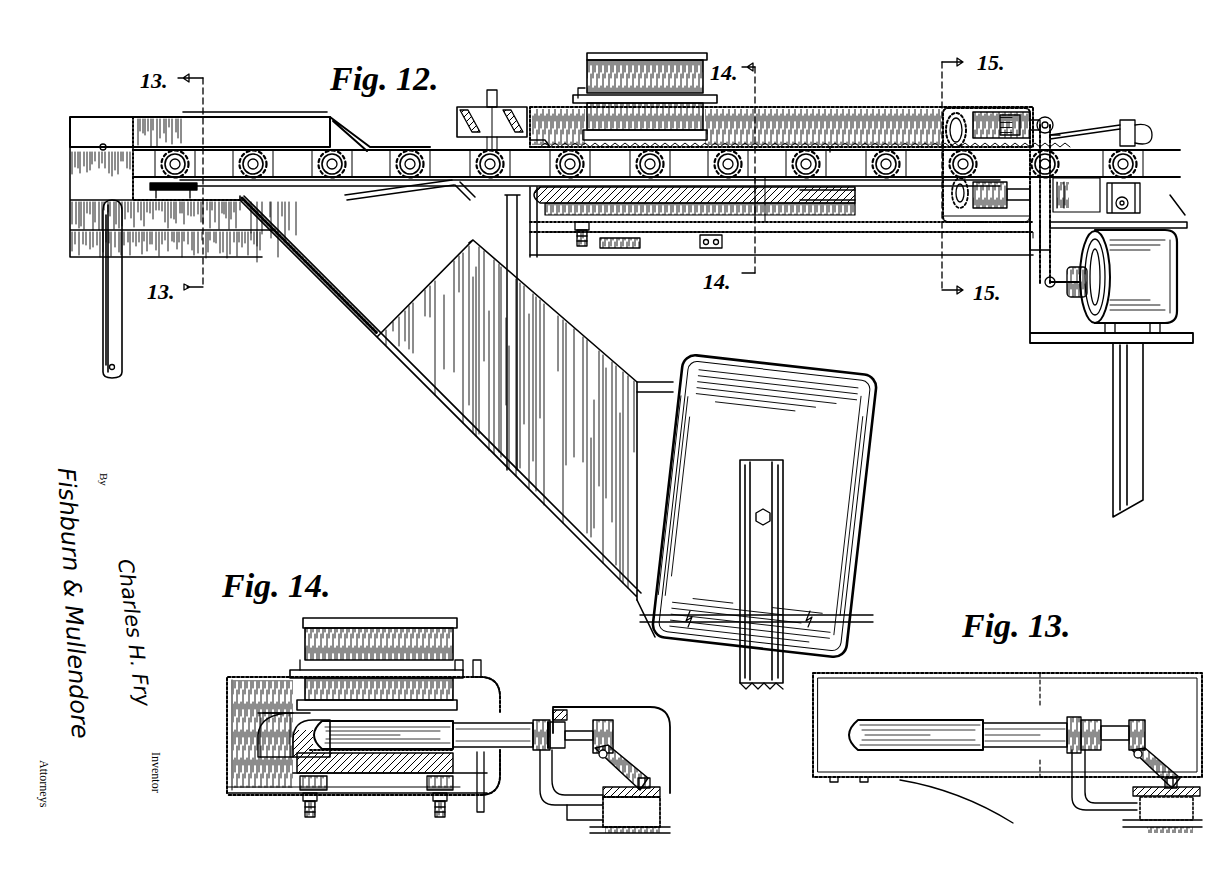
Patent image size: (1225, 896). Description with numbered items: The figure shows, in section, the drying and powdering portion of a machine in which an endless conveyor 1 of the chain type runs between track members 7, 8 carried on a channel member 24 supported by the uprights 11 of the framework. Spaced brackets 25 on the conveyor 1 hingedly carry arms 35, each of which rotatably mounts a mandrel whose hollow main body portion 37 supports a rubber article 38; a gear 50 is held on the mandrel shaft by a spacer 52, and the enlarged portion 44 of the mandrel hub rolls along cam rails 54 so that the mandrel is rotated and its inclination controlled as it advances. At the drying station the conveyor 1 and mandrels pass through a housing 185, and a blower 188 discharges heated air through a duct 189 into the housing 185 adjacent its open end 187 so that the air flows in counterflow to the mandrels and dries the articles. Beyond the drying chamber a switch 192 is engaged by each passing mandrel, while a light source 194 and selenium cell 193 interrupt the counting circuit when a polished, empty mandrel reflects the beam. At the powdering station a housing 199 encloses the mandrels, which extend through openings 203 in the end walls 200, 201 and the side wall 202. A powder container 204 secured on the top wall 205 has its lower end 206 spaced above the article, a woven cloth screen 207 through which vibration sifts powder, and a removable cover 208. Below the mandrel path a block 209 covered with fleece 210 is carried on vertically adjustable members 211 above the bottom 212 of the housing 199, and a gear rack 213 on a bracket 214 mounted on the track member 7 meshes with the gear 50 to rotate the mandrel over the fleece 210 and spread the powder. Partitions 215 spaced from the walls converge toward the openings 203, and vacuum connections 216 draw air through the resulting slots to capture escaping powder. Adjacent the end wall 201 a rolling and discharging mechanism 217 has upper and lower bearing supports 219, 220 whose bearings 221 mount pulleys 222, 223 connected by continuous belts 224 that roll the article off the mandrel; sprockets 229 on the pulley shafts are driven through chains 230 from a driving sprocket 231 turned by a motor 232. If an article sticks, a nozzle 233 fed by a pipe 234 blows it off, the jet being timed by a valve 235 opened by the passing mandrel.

In FIG. 12, the endless conveyor 1 is at (463, 229).
In FIG. 14, the endless conveyor 1 is at (650, 781).
In FIG. 13, the endless conveyor 1 is at (1160, 779).
In FIG. 14, the track member 7 is at (662, 793).
In FIG. 13, the track member 7 is at (1185, 787).
In FIG. 14, the track member 8 is at (607, 803).
In FIG. 13, the track member 8 is at (1137, 792).
In FIG. 14, the uprights 11 is at (662, 830).
In FIG. 13, the uprights 11 is at (1147, 826).
In FIG. 12, the channel member 24 is at (677, 252).
In FIG. 14, the channel member 24 is at (662, 820).
In FIG. 13, the channel member 24 is at (1073, 810).
In FIG. 12, the brackets 25 is at (456, 200).
In FIG. 14, the brackets 25 is at (636, 757).
In FIG. 13, the brackets 25 is at (1153, 762).
In FIG. 12, the arms 35 is at (852, 163).
In FIG. 14, the arms 35 is at (606, 720).
In FIG. 13, the arms 35 is at (1145, 730).
In FIG. 14, the main body portion 37 is at (485, 780).
In FIG. 13, the main body portion 37 is at (1017, 721).
In FIG. 12, the rubber articles 38 is at (669, 164).
In FIG. 14, the rubber articles 38 is at (420, 768).
In FIG. 13, the rubber articles 38 is at (917, 718).
In FIG. 14, the enlarged portion 44 is at (557, 787).
In FIG. 13, the enlarged portion 44 is at (1075, 718).
In FIG. 12, the gear 50 is at (887, 150).
In FIG. 14, the gear 50 is at (548, 748).
In FIG. 13, the gear 50 is at (1090, 720).
In FIG. 14, the spacer 52 is at (583, 733).
In FIG. 13, the spacer 52 is at (1118, 724).
In FIG. 12, the cam rails 54 is at (368, 189).
In FIG. 14, the cam rails 54 is at (552, 768).
In FIG. 12, the housing 185 is at (108, 118).
In FIG. 13, the housing 185 is at (1058, 673).
In FIG. 12, the open end 187 is at (406, 149).
In FIG. 12, the blower 188 is at (795, 350).
In FIG. 12, the duct 189 is at (423, 348).
In FIG. 12, the switch 192 is at (503, 105).
In FIG. 12, the selenium cell 193 is at (458, 114).
In FIG. 12, the light source 194 is at (518, 147).
In FIG. 12, the housing 199 is at (792, 104).
In FIG. 14, the housing 199 is at (240, 677).
In FIG. 12, the end wall 200 is at (511, 164).
In FIG. 14, the end wall 200 is at (290, 717).
In FIG. 12, the end wall 201 is at (1040, 116).
In FIG. 12, the side wall 202 is at (860, 142).
In FIG. 14, the side wall 202 is at (500, 712).
In FIG. 12, the openings 203 is at (540, 147).
In FIG. 14, the openings 203 is at (263, 743).
In FIG. 12, the powder container 204 is at (700, 70).
In FIG. 14, the powder container 204 is at (313, 648).
In FIG. 12, the top wall 205 is at (760, 103).
In FIG. 14, the top wall 205 is at (448, 667).
In FIG. 12, the lower end 206 is at (707, 137).
In FIG. 14, the lower end 206 is at (390, 707).
In FIG. 12, the screen 207 is at (636, 165).
In FIG. 14, the screen 207 is at (313, 711).
In FIG. 12, the cover 208 is at (602, 59).
In FIG. 14, the cover 208 is at (347, 620).
In FIG. 12, the block 209 is at (658, 204).
In FIG. 14, the block 209 is at (390, 774).
In FIG. 12, the fleece 210 is at (765, 176).
In FIG. 14, the fleece 210 is at (320, 760).
In FIG. 12, the members 211 is at (845, 226).
In FIG. 14, the members 211 is at (317, 778).
In FIG. 12, the bottom 212 is at (790, 248).
In FIG. 14, the bottom 212 is at (240, 790).
In FIG. 12, the gear rack 213 is at (827, 150).
In FIG. 14, the gear rack 213 is at (556, 709).
In FIG. 14, the bracket 214 is at (647, 707).
In FIG. 12, the partitions 215 is at (540, 240).
In FIG. 14, the partitions 215 is at (500, 688).
In FIG. 14, the vacuum connections 216 is at (478, 661).
In FIG. 12, the rolling and discharging mechanism 217 is at (948, 112).
In FIG. 12, the bearing support 219 is at (1027, 100).
In FIG. 12, the bearing support 220 is at (1007, 202).
In FIG. 12, the bearings 221 is at (985, 164).
In FIG. 12, the pulleys 222 is at (950, 193).
In FIG. 12, the pulleys 223 is at (950, 216).
In FIG. 12, the continuous belts 224 is at (985, 225).
In FIG. 12, the sprockets 229 is at (1053, 132).
In FIG. 12, the chain 230 is at (1060, 162).
In FIG. 12, the driving sprocket 231 is at (1043, 283).
In FIG. 12, the motor 232 is at (1107, 322).
In FIG. 12, the nozzle 233 is at (962, 124).
In FIG. 12, the pipe 234 is at (1088, 136).
In FIG. 12, the valve 235 is at (1124, 123).